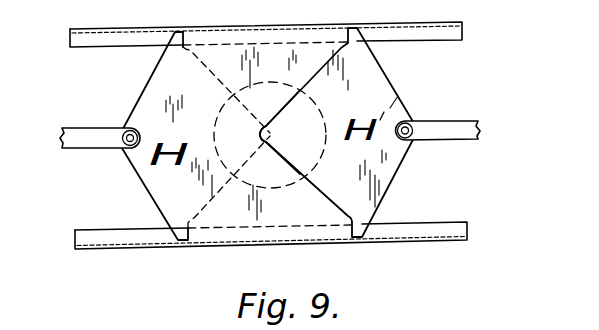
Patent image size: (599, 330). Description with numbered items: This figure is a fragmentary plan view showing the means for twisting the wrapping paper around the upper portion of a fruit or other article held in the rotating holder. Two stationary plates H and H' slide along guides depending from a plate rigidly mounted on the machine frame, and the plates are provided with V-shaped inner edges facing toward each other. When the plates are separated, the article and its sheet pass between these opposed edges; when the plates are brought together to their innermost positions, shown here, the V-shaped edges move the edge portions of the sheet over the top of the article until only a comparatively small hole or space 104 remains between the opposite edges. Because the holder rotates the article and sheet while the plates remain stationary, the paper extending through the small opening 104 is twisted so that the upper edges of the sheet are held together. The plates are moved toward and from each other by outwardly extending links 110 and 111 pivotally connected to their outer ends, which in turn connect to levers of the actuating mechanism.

The hole or space 104 is at (272, 133).
The link 110 is at (83, 128).
The link 111 is at (448, 98).